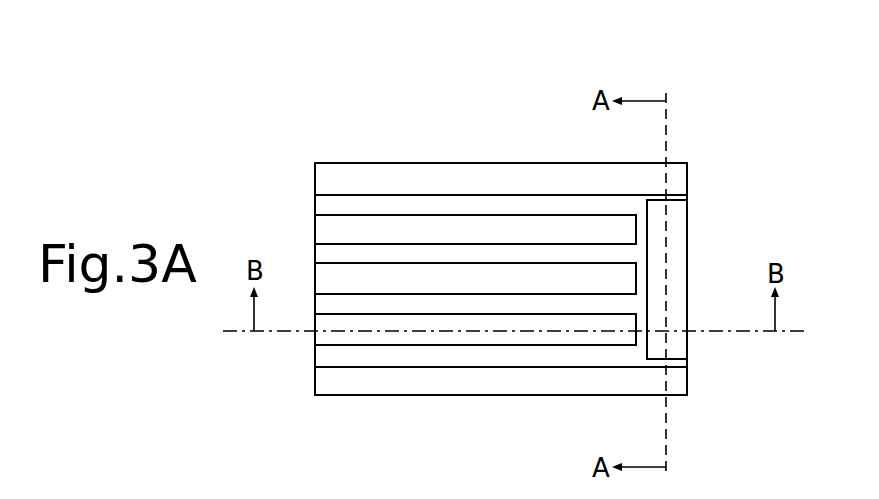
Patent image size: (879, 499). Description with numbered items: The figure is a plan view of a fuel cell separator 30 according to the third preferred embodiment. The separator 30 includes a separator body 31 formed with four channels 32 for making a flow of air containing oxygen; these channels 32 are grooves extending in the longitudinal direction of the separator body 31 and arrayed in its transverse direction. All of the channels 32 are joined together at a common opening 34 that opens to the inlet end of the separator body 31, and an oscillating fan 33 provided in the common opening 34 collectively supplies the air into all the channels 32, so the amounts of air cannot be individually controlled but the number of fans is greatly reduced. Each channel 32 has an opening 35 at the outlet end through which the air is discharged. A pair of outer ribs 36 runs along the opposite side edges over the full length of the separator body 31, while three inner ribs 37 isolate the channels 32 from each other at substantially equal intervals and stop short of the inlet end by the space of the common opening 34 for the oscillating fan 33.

The separator 30 is at (288, 86).
The separator body 31 is at (474, 177).
The channel 32 is at (395, 252).
The oscillating fan 33 is at (678, 242).
The common opening 34 is at (680, 198).
The opening 35 is at (327, 257).
The outer rib 36 is at (566, 178).
The inner rib 37 is at (328, 282).